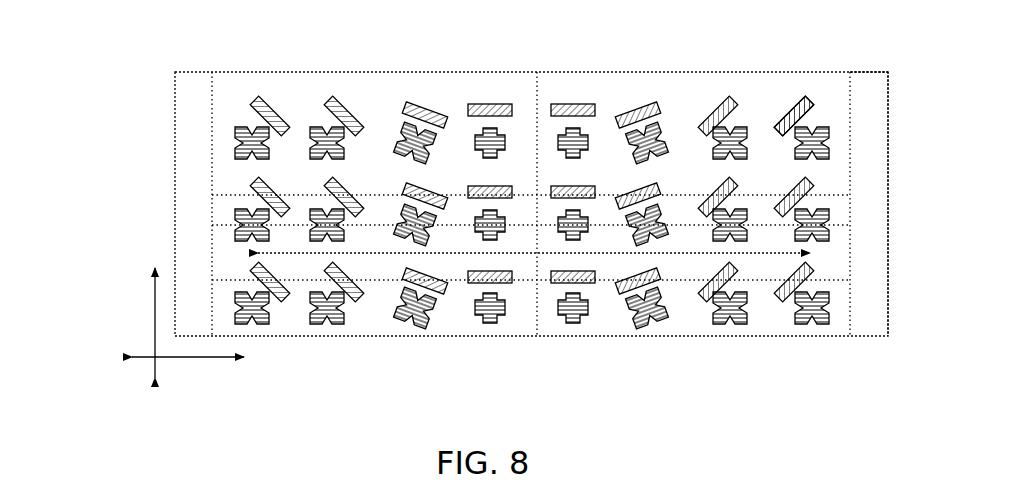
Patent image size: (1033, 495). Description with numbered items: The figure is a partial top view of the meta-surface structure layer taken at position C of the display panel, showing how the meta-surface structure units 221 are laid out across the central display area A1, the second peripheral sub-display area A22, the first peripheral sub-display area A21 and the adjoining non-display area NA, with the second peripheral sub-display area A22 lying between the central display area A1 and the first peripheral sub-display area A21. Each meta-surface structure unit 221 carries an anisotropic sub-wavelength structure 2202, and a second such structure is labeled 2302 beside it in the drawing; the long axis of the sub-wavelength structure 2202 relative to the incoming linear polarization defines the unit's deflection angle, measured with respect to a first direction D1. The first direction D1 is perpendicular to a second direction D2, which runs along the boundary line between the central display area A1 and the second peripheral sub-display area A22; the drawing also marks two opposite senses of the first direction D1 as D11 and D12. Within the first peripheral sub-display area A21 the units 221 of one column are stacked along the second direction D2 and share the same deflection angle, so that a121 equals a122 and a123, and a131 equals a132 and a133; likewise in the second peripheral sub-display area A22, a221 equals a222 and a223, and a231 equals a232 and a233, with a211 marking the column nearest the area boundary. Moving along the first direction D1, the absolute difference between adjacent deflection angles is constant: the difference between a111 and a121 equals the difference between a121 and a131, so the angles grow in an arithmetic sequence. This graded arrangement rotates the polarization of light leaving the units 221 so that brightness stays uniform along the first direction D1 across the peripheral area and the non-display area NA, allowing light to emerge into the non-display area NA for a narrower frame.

The position C is at (152, 57).
The central display area A1 is at (212, 88).
The second peripheral sub-display area A22 is at (534, 88).
The first peripheral sub-display area A21 is at (847, 97).
The non-display area NA is at (885, 97).
The first sub-direction D11 is at (829, 256).
The second sub-direction D12 is at (514, 256).
The first direction D1 is at (177, 358).
The second direction D2 is at (150, 337).
The deflection angle a111 is at (574, 185).
The deflection angle a121 is at (655, 191).
The deflection angle a122 is at (660, 223).
The deflection angle a123 is at (655, 276).
The deflection angle a131 is at (732, 195).
The deflection angle a132 is at (741, 221).
The deflection angle a133 is at (734, 280).
The deflection angle a211 is at (490, 185).
The deflection angle a221 is at (412, 192).
The deflection angle a222 is at (404, 223).
The deflection angle a223 is at (412, 276).
The deflection angle a231 is at (326, 195).
The deflection angle a232 is at (318, 221).
The deflection angle a233 is at (326, 280).
The anisotropic sub-wavelength structure 2202 is at (805, 282).
The third sub-pixel electrode 2302 is at (826, 308).
The meta-surface structure unit 221 is at (794, 116).